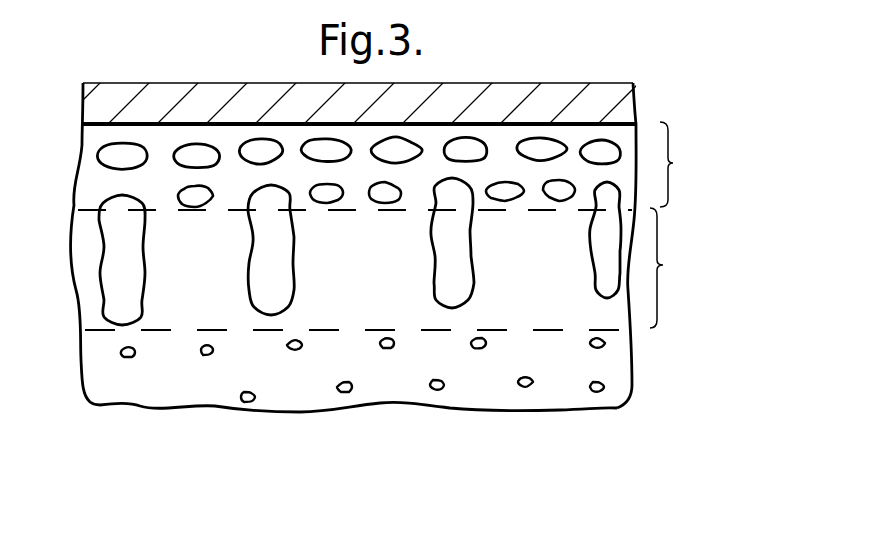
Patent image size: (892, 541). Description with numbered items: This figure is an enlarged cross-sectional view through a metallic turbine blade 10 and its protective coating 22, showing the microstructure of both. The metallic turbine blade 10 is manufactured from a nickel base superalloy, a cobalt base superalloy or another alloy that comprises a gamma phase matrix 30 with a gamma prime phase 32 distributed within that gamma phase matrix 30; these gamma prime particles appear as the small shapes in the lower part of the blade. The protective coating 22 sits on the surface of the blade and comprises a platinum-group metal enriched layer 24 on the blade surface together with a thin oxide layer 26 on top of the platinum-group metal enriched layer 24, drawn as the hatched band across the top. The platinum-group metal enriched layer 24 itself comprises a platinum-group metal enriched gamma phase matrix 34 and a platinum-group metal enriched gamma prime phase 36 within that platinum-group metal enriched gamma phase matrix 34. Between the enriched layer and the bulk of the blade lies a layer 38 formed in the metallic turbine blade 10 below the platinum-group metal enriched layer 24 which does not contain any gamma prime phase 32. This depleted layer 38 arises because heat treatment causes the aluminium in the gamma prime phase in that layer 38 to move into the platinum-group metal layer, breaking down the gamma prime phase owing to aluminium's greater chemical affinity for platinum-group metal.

The metallic turbine blade 10 is at (623, 360).
The protective coating 22 is at (622, 64).
The platinum-group metal enriched layer 24 is at (393, 166).
The thin oxide layer 26 is at (635, 108).
The gamma phase matrix 30 is at (625, 395).
The gamma prime phase 32 is at (597, 392).
The platinum-group metal enriched gamma phase matrix 34 is at (95, 138).
The platinum-group metal enriched gamma prime phase 36 is at (118, 202).
The layer 38 is at (393, 269).